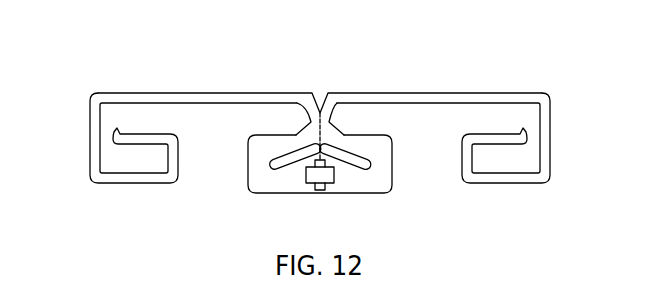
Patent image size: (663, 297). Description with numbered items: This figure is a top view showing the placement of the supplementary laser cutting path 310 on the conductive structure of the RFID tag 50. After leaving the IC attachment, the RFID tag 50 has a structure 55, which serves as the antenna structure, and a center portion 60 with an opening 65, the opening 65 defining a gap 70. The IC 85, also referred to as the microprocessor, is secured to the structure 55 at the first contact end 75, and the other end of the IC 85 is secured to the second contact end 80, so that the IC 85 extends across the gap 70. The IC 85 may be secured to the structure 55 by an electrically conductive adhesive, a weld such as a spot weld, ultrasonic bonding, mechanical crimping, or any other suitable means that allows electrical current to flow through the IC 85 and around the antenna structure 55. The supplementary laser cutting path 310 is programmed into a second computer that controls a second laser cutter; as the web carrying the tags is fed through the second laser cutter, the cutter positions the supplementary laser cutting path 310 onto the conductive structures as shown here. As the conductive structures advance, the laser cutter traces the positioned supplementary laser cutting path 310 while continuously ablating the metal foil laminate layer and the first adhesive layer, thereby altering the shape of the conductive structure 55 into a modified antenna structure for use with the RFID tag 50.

The RFID tag 50 is at (320, 66).
The supplementary laser cutting path 310 is at (91, 137).
The structure 55 is at (529, 183).
The IC 85 is at (311, 112).
The center portion 60 is at (392, 151).
The opening 65 is at (262, 168).
The second contact end 80 is at (334, 192).
The gap 70 is at (320, 192).
The first contact end 75 is at (309, 192).